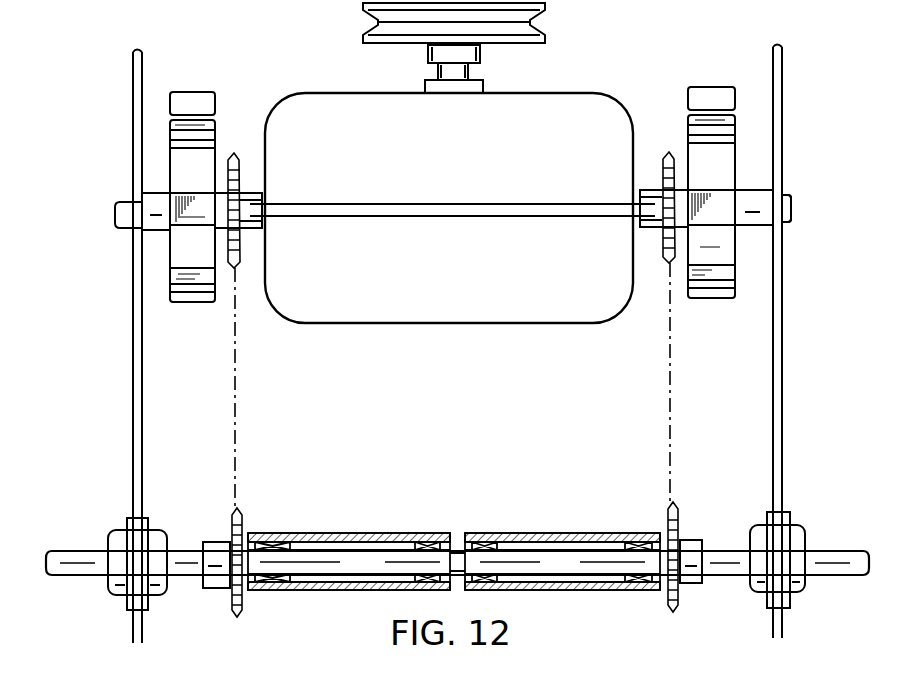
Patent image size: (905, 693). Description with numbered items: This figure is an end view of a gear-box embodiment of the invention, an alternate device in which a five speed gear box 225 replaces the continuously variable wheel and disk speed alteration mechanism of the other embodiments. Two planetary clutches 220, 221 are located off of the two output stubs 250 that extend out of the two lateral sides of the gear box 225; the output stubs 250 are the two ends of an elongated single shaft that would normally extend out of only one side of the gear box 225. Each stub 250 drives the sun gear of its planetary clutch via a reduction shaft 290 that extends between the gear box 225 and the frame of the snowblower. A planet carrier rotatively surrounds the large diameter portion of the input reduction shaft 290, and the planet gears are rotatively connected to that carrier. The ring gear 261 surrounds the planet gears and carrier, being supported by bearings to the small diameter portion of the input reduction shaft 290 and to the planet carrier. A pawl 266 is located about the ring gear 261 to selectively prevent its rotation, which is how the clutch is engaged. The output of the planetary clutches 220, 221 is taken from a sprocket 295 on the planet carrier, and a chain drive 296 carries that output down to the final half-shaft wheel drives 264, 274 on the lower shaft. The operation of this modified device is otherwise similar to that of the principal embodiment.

The planetary clutch 220 is at (232, 117).
The planetary clutch 221 is at (672, 100).
The five speed gear box 225 is at (490, 323).
The output stub 250 is at (633, 175).
The ring gear 261 is at (723, 157).
The final half-shaft wheel drive 264 is at (728, 563).
The pawl 266 is at (712, 92).
The final half-shaft wheel drive 274 is at (183, 567).
The reduction shaft 290 is at (792, 198).
The sprocket 295 is at (663, 248).
The chain drive 296 is at (672, 370).